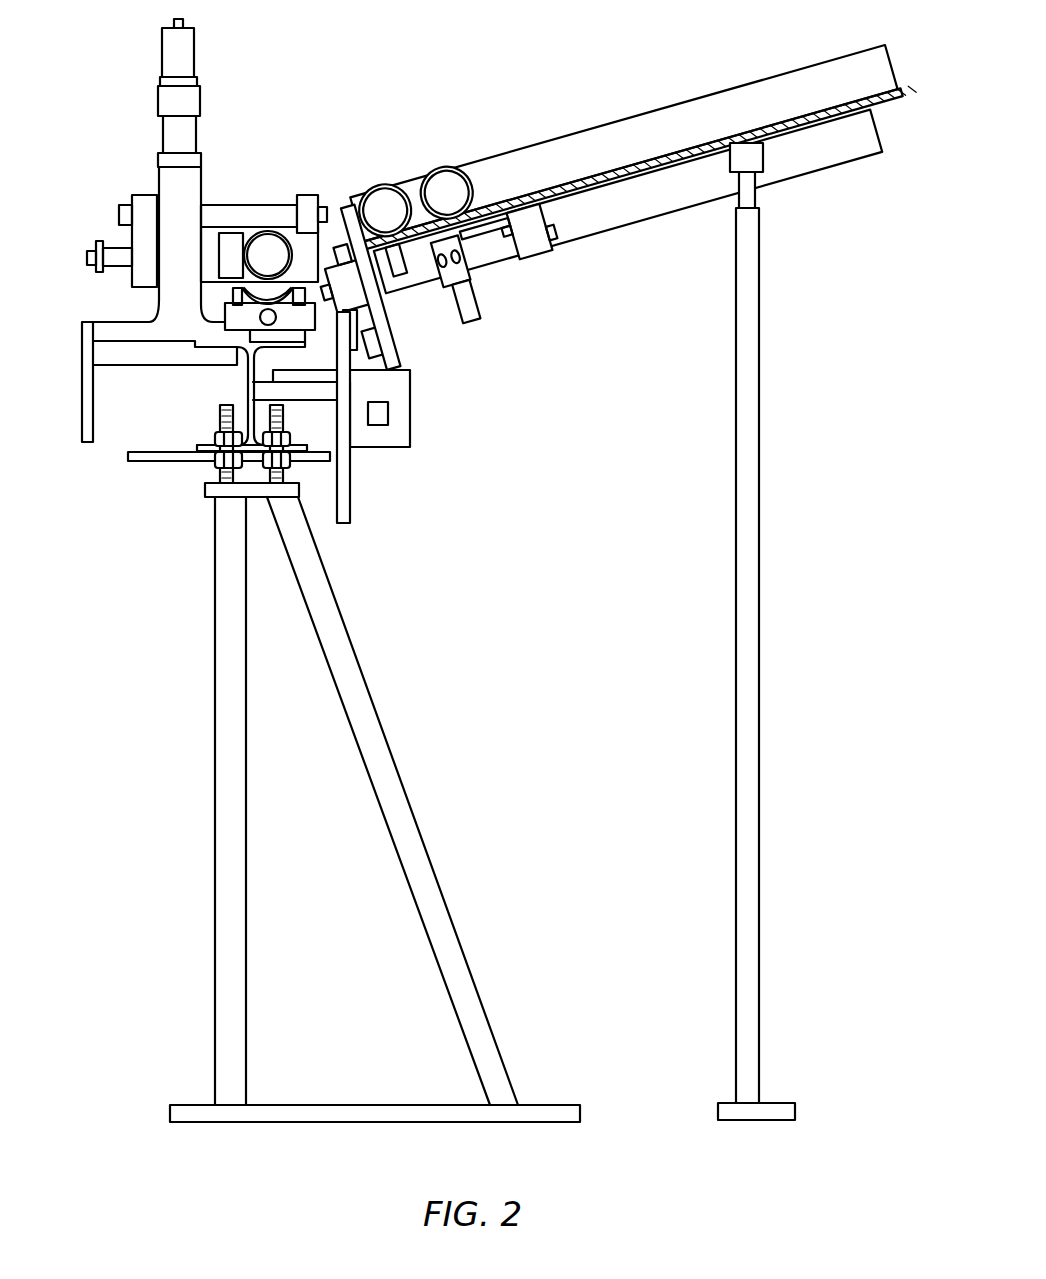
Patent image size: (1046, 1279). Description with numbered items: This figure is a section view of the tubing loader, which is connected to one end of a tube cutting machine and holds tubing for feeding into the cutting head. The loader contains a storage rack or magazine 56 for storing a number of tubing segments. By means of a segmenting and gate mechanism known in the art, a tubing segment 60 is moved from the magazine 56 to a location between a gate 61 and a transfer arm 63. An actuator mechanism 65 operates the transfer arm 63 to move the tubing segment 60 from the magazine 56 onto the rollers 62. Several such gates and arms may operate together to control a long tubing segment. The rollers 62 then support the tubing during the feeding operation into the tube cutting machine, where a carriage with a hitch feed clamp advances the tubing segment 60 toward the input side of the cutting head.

The storage rack or magazine 56 is at (675, 122).
The tubing segment 60 is at (378, 188).
The gate 61 is at (348, 208).
The rollers 62 is at (255, 291).
The transfer arm 63 is at (472, 323).
The actuator mechanism 65 is at (382, 447).